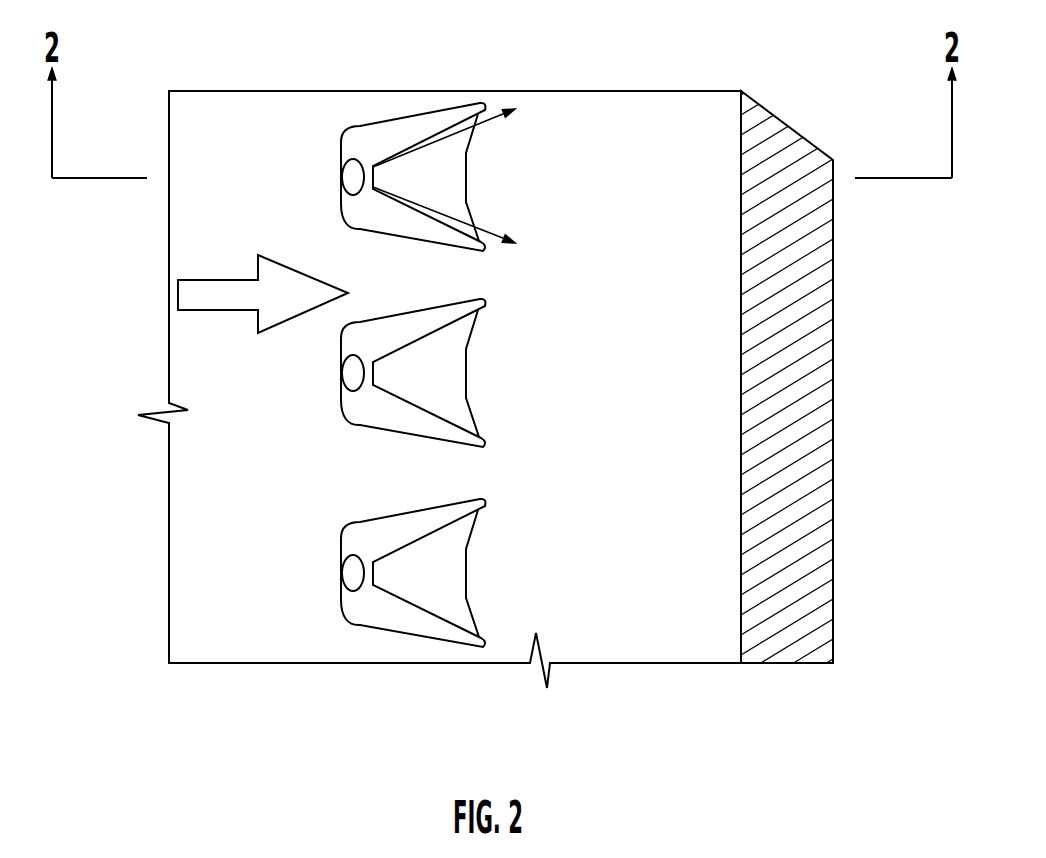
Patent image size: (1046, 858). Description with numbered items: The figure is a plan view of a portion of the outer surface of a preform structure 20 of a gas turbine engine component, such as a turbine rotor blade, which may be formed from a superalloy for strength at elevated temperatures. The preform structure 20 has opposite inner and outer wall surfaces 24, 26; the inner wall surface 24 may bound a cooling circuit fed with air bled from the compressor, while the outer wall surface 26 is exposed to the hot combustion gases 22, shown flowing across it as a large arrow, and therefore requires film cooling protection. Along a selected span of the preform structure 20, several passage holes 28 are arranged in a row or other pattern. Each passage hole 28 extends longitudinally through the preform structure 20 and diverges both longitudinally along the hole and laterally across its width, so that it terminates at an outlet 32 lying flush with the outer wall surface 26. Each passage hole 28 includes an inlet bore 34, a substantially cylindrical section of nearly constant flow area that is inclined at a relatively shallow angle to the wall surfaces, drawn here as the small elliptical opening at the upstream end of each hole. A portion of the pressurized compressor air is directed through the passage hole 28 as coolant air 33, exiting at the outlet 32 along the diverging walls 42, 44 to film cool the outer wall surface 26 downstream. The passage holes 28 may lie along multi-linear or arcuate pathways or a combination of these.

The preform structure 20 is at (668, 90).
The hot combustion gases 22 is at (178, 291).
The inner wall surface 24 is at (833, 398).
The outer wall surface 26 is at (630, 380).
The passage hole 28 is at (343, 127).
The outlet 32 is at (428, 232).
The coolant air 33 is at (453, 138).
The inlet bore 34 is at (347, 378).
The first side wall 42 is at (413, 127).
The second side wall 44 is at (383, 223).